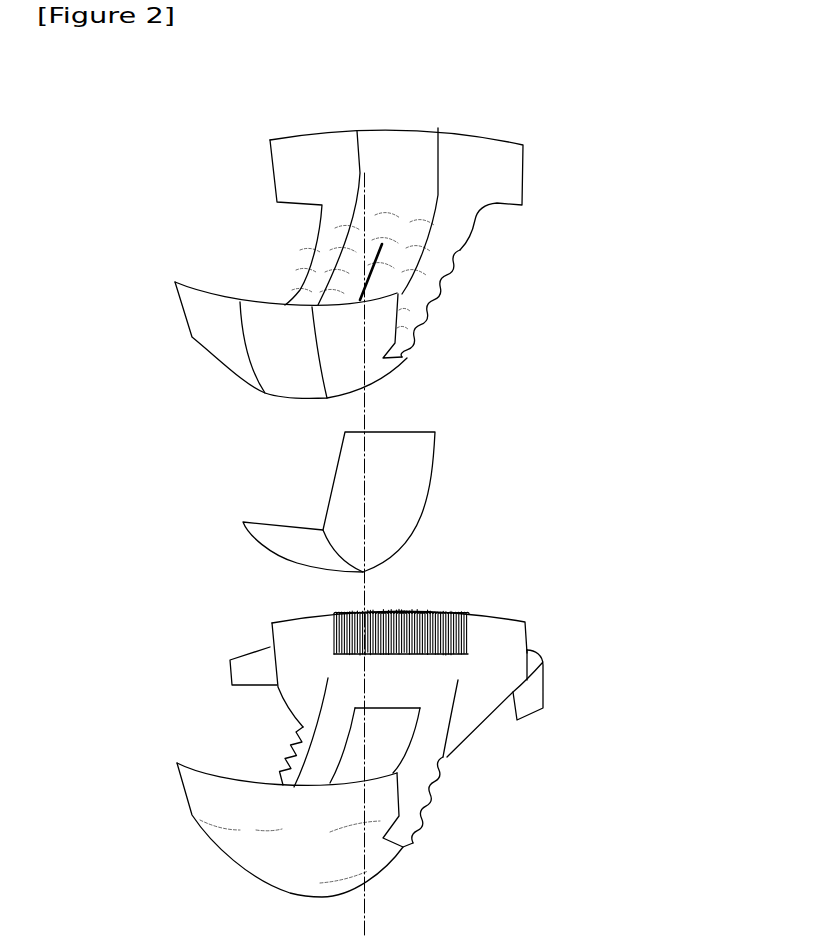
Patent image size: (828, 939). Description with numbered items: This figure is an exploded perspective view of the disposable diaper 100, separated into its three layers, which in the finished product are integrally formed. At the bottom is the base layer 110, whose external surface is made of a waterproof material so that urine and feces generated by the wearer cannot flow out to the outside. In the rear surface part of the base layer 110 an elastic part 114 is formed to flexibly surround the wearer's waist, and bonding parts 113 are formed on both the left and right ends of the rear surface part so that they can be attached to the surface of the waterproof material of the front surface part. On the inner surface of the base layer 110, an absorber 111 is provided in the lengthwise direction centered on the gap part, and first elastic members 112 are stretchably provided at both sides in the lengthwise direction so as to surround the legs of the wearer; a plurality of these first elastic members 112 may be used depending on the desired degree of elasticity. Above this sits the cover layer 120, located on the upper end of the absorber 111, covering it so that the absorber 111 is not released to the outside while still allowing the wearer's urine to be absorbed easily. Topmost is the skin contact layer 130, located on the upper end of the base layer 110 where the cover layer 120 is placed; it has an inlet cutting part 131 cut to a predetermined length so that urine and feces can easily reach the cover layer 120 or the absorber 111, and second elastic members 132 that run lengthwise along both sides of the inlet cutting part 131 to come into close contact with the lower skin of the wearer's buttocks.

The disposable diaper 100 is at (102, 112).
The base layer 110 is at (200, 723).
The absorber 111 is at (390, 765).
The first elastic members 112 is at (452, 755).
The bonding parts 113 is at (543, 708).
The elastic part 114 is at (410, 630).
The cover layer 120 is at (200, 523).
The skin contact layer 130 is at (200, 254).
The inlet cutting part 131 is at (370, 297).
The second elastic members 132 is at (430, 222).